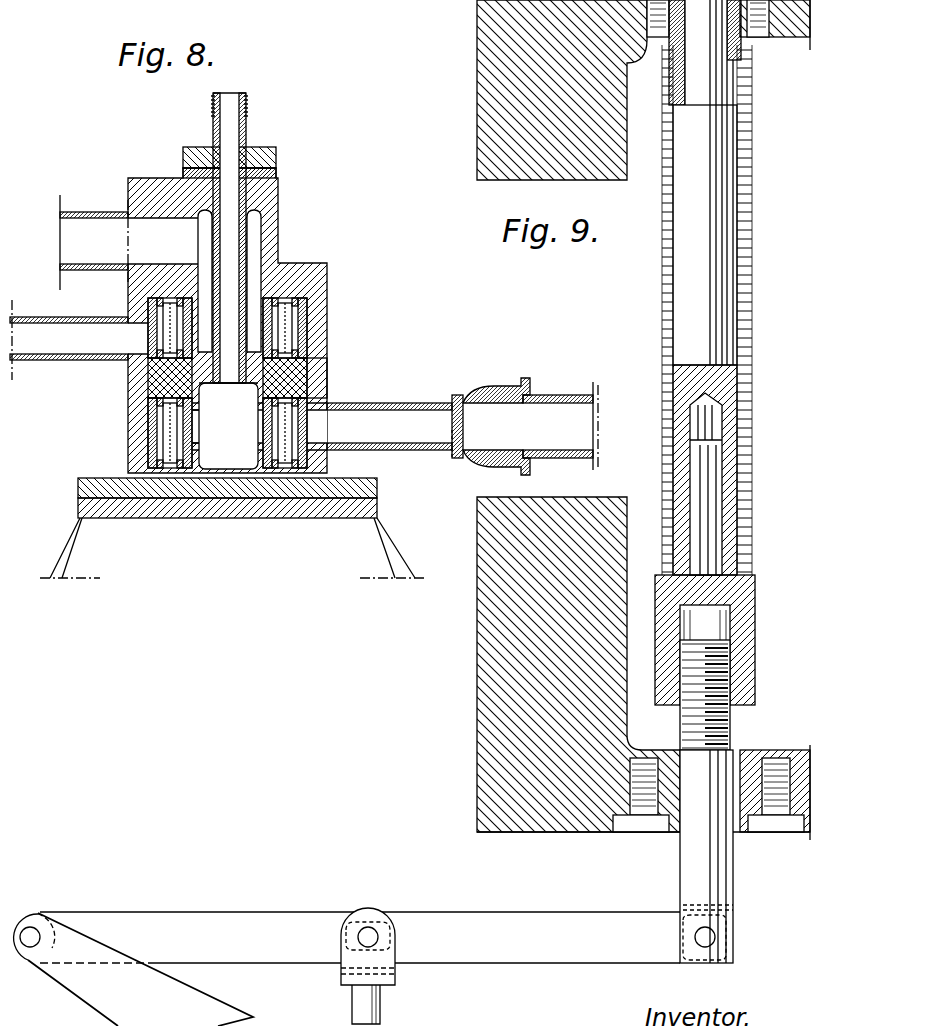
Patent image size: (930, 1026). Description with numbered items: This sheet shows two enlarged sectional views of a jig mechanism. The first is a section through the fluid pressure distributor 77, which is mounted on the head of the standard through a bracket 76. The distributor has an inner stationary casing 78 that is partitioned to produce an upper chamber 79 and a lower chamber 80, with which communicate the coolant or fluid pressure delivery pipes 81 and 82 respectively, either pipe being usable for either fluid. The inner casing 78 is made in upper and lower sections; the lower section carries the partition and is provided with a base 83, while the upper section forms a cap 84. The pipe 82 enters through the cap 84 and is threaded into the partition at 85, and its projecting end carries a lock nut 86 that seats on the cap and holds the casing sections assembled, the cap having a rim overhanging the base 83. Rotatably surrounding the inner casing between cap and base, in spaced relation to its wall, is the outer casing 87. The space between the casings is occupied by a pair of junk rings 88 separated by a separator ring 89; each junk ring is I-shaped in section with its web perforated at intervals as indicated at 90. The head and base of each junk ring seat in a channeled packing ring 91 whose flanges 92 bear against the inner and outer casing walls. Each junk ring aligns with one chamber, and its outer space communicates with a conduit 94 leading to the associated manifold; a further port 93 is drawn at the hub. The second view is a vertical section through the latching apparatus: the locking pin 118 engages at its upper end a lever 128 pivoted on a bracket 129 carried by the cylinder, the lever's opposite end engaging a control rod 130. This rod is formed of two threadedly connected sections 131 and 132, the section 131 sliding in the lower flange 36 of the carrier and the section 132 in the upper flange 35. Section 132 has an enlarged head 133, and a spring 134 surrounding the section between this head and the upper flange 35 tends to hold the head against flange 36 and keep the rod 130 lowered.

In FIG. 8, the bracket 76 is at (376, 548).
In FIG. 8, the fluid pressure distributor 77 is at (337, 309).
In FIG. 8, the inner stationary casing 78 is at (228, 394).
In FIG. 8, the upper chamber 79 is at (258, 249).
In FIG. 8, the lower chamber 80 is at (228, 426).
In FIG. 8, the fluid pressure delivery pipe 81 is at (88, 212).
In FIG. 8, the fluid pressure delivery pipe 82 is at (250, 123).
In FIG. 8, the base 83 is at (90, 478).
In FIG. 8, the cap 84 is at (280, 206).
In FIG. 8, the threaded connection 85 is at (232, 383).
In FIG. 8, the lock nut 86 is at (278, 153).
In FIG. 8, the outer casing 87 is at (328, 368).
In FIG. 8, the junk rings 88 is at (158, 346).
In FIG. 8, the separator ring 89 is at (328, 386).
In FIG. 8, the perforations 90 is at (163, 330).
In FIG. 8, the channeled packing ring 91 is at (150, 383).
In FIG. 8, the flanges 92 is at (157, 300).
In FIG. 8, the port 93 is at (210, 440).
In FIG. 8, the conduit 94 is at (42, 362).
In FIG. 9, the upper flange 35 is at (783, 28).
In FIG. 9, the lower flange 36 is at (784, 750).
In FIG. 9, the locking pin 118 is at (380, 1003).
In FIG. 9, the lever 128 is at (498, 921).
In FIG. 9, the bracket 129 is at (90, 998).
In FIG. 9, the control rod 130 is at (718, 886).
In FIG. 9, the lower rod section 131 is at (732, 666).
In FIG. 9, the upper rod section 132 is at (703, 257).
In FIG. 9, the enlarged head 133 is at (757, 619).
In FIG. 9, the spring 134 is at (748, 468).